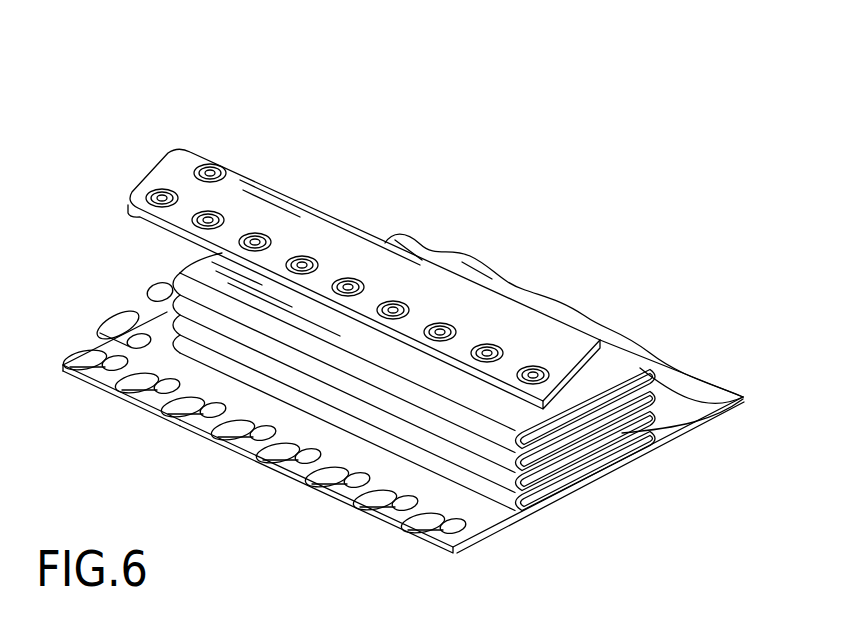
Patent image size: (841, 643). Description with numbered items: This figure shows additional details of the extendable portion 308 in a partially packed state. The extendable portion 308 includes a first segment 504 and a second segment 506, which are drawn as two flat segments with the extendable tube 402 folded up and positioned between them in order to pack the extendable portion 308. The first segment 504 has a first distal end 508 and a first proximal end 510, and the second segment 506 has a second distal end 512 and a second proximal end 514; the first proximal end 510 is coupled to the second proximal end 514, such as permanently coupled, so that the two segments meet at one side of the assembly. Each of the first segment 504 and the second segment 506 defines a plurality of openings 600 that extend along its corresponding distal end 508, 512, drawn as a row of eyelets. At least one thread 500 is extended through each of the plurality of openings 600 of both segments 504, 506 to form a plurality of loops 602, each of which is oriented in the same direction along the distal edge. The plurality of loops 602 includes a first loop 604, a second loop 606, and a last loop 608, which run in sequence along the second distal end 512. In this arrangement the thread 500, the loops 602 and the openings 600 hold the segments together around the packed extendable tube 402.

The extendable portion 308 is at (139, 81).
The extendable tube 402 is at (652, 427).
The thread 500 is at (67, 366).
The first segment 504 is at (172, 170).
The second segment 506 is at (105, 349).
The first distal end 508 is at (498, 380).
The first proximal end 510 is at (720, 382).
The second distal end 512 is at (437, 545).
The second proximal end 514 is at (746, 398).
The openings 600 is at (103, 330).
The loops 602 is at (122, 408).
The first loop 604 is at (176, 413).
The second loop 606 is at (226, 440).
The last loop 608 is at (412, 531).